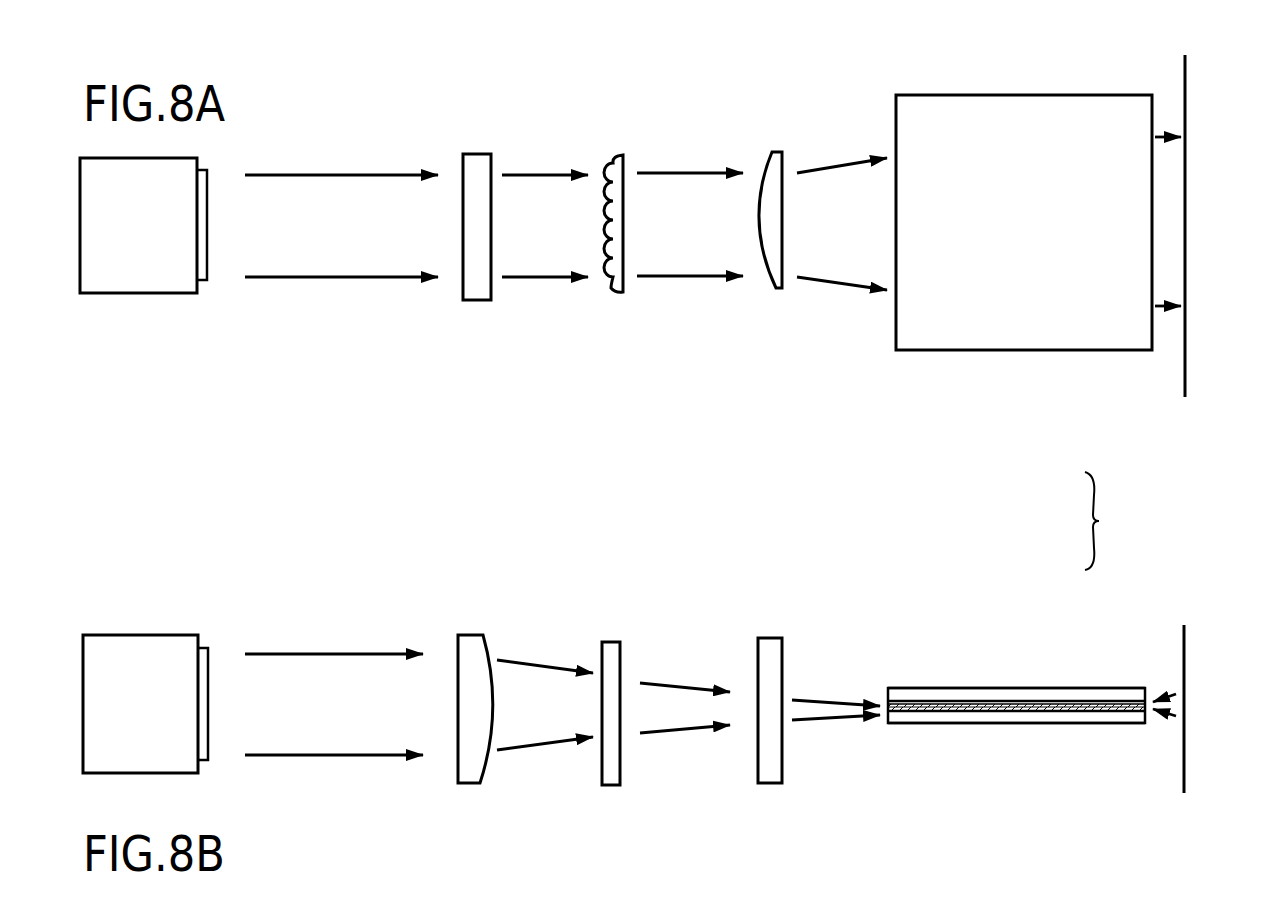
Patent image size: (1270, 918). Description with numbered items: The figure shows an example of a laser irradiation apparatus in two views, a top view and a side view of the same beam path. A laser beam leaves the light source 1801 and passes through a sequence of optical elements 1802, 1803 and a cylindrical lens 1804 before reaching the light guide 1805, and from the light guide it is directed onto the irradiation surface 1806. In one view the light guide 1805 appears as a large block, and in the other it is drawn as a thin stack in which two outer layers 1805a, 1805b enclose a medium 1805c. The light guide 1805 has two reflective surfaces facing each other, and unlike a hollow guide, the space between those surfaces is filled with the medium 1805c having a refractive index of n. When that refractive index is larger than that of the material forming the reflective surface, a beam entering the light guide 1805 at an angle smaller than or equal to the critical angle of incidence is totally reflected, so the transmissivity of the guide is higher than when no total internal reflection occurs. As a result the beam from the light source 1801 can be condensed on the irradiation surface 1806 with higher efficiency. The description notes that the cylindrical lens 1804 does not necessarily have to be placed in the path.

In FIG. 8A, the light source 1801 is at (123, 238).
In FIG. 8B, the light source 1801 is at (155, 692).
In FIG. 8A, the optical element / lens 1802 is at (479, 292).
In FIG. 8B, the optical element / lens 1802 is at (478, 642).
In FIG. 8A, the lens array / optical element 1803 is at (617, 278).
In FIG. 8B, the lens array / optical element 1803 is at (613, 652).
In FIG. 8A, the cylindrical lens 1804 is at (777, 270).
In FIG. 8B, the cylindrical lens 1804 is at (770, 645).
In FIG. 8A, the light guide 1805 is at (1075, 317).
In FIG. 8B, the light guide 1805 is at (1016, 705).
In FIG. 8B, the first layer of display device 1805a is at (902, 697).
In FIG. 8B, the second layer of display device 1805b is at (912, 705).
In FIG. 8B, the medium 1805c is at (1058, 703).
In FIG. 8A, the irradiation surface 1806 is at (1185, 397).
In FIG. 8B, the irradiation surface 1806 is at (1186, 650).